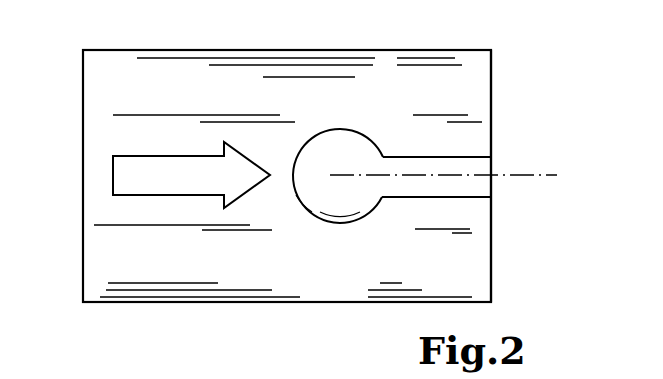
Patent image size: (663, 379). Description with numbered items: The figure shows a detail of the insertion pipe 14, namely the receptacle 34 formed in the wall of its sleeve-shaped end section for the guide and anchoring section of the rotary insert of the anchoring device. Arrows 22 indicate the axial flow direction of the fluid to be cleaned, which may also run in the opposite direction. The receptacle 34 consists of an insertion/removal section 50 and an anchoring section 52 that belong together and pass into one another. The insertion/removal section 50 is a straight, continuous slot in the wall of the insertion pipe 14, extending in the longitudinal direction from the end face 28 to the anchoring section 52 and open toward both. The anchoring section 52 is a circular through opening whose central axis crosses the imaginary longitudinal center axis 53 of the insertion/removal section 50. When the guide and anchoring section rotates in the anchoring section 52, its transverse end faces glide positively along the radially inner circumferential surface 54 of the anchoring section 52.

The insertion pipe 14 is at (120, 72).
The arrows 22 is at (128, 174).
The end face 28 is at (493, 92).
The receptacle 34 is at (354, 146).
The insertion/removal section 50 is at (476, 183).
The anchoring section 52 is at (339, 208).
The longitudinal center axis 53 is at (529, 175).
The radially inner circumferential surface 54 is at (303, 205).